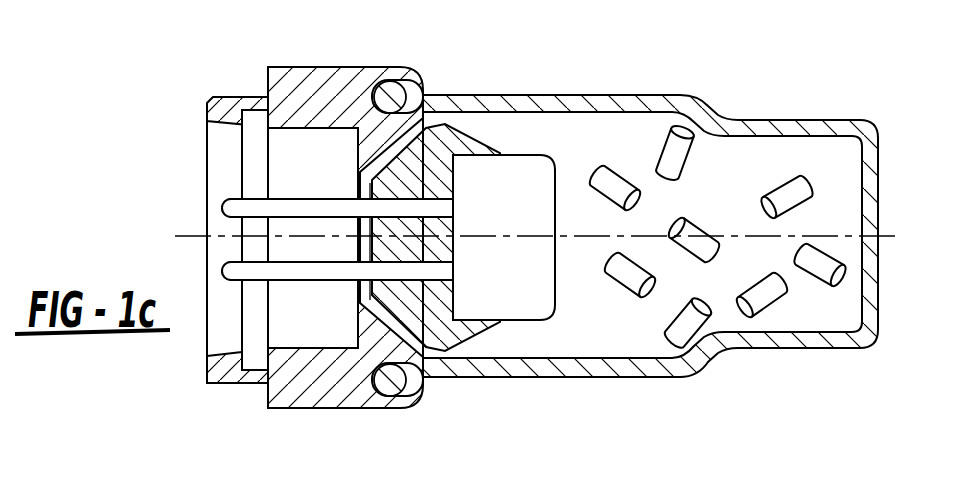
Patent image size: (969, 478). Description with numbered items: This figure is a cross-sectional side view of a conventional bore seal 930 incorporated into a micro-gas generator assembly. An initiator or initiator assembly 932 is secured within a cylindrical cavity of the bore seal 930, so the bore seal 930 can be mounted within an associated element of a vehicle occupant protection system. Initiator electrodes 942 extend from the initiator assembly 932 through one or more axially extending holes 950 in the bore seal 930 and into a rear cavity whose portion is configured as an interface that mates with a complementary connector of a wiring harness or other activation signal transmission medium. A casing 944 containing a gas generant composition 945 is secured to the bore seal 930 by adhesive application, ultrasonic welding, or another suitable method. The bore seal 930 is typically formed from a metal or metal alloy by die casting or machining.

The bore seal 930 is at (312, 383).
The initiator assembly 932 is at (530, 154).
The initiator electrodes 942 is at (225, 208).
The casing 944 is at (572, 385).
The gas generant composition 945 is at (777, 180).
The axially extending holes 950 is at (357, 197).